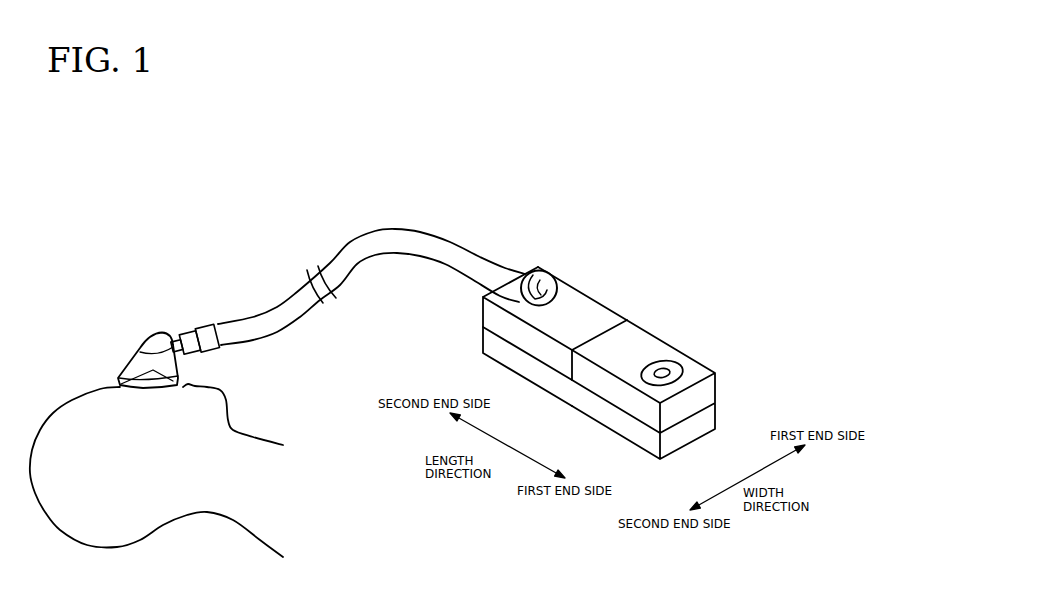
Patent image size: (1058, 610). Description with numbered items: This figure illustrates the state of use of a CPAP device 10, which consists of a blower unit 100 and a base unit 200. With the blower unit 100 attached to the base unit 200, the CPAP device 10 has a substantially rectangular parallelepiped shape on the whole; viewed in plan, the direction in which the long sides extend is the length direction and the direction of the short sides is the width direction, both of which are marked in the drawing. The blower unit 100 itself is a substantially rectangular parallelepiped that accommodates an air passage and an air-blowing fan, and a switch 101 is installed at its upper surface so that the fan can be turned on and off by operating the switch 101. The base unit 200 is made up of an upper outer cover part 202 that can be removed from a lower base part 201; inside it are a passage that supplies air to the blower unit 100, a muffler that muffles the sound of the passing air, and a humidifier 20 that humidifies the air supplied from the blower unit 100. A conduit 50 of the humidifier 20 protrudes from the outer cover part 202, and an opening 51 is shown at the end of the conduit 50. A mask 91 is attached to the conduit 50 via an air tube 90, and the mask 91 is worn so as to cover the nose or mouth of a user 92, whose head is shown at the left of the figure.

The CPAP device 10 is at (529, 327).
The humidifier 20 is at (529, 350).
The conduit 50 is at (559, 282).
The cable outlet 51 is at (556, 307).
The air tube 90 is at (271, 339).
The mask 91 is at (150, 335).
The user 92 is at (153, 541).
The blower unit 100 is at (626, 363).
The switch 101 is at (668, 362).
The base unit 200 is at (485, 336).
The lower base part 201 is at (480, 338).
The upper outer cover part 202 is at (480, 311).